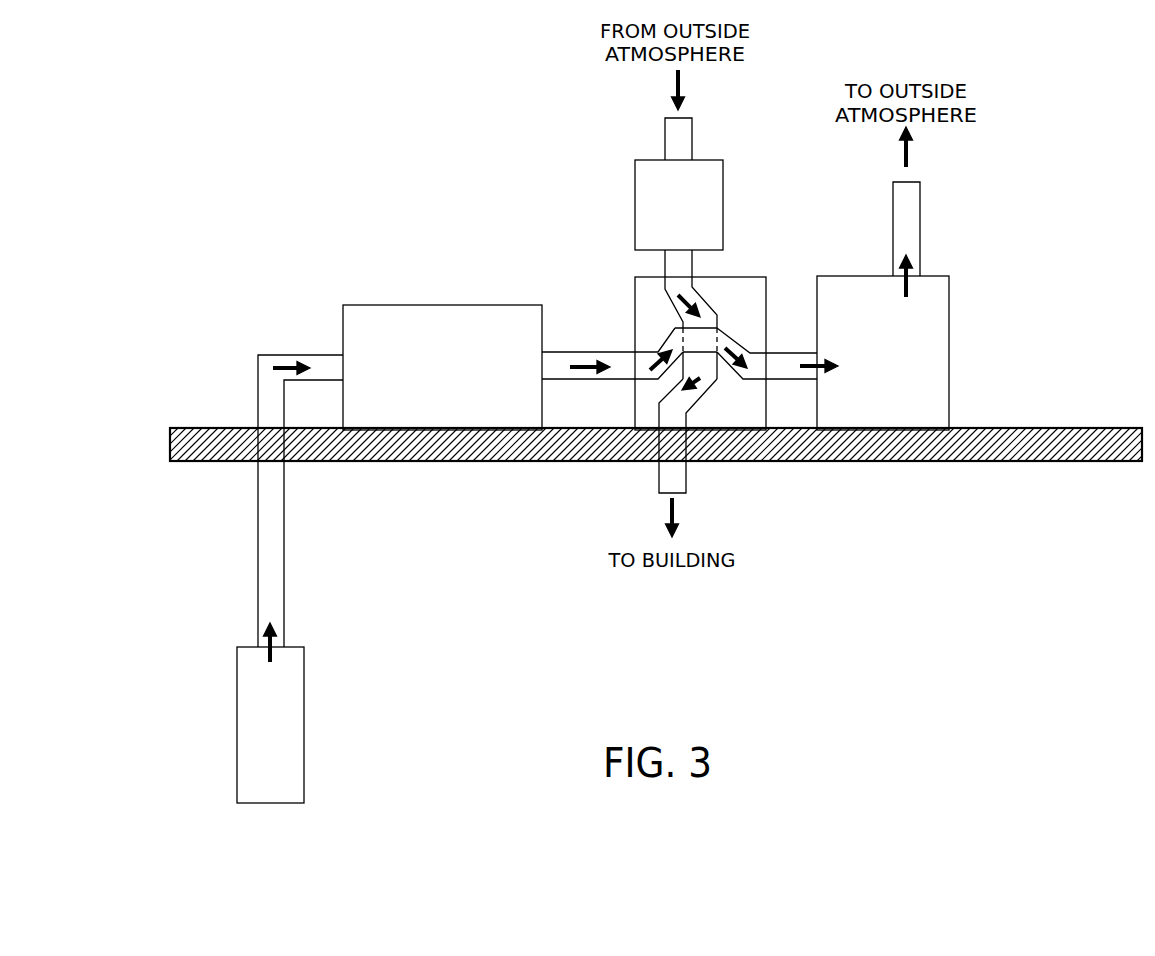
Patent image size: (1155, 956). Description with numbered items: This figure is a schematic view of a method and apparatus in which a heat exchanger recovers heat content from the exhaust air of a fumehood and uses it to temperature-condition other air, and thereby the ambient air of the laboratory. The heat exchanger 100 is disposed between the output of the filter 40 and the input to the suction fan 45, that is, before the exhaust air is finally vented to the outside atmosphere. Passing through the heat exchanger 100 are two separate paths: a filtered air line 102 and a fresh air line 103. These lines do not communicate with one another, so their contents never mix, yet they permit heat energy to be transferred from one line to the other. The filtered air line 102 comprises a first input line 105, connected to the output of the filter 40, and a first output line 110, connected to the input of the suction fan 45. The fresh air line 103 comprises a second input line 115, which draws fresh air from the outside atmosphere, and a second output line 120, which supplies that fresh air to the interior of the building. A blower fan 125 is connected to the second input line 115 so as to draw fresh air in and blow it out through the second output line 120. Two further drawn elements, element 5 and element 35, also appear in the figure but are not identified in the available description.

The blower 5 is at (223, 722).
The supply conduit 35 is at (258, 352).
The filter 40 is at (408, 300).
The suction fan 45 is at (953, 344).
The heat exchanger 100 is at (743, 267).
The filtered air line 102 is at (645, 387).
The fresh air line 103 is at (663, 289).
The first input line 105 is at (570, 384).
The first output line 110 is at (792, 387).
The second input line 115 is at (698, 133).
The second output line 120 is at (700, 483).
The blower fan 125 is at (625, 208).